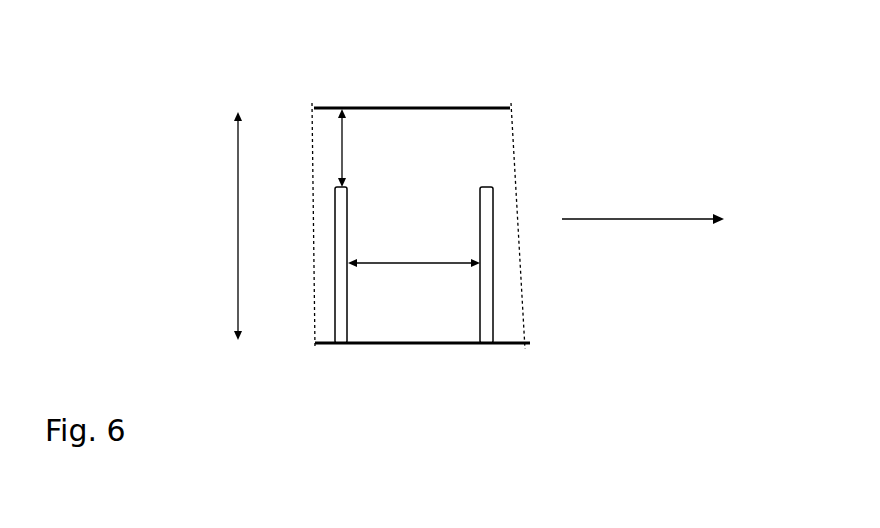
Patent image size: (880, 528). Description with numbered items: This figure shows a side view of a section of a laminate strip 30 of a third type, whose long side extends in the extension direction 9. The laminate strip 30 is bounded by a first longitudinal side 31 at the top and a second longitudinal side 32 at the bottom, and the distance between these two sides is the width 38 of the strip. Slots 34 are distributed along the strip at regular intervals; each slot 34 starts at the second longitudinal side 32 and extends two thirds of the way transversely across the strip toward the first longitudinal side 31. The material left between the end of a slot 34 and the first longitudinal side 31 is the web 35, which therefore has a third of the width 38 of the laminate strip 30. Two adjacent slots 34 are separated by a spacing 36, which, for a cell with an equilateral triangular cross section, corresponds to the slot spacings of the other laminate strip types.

The laminate strip 30 is at (604, 110).
The first longitudinal side 31 is at (424, 107).
The second longitudinal side 32 is at (410, 345).
The slots 34 is at (343, 333).
The web 35 is at (343, 141).
The spacing 36 is at (425, 265).
The width 38 is at (238, 200).
The extension direction 9 is at (663, 217).